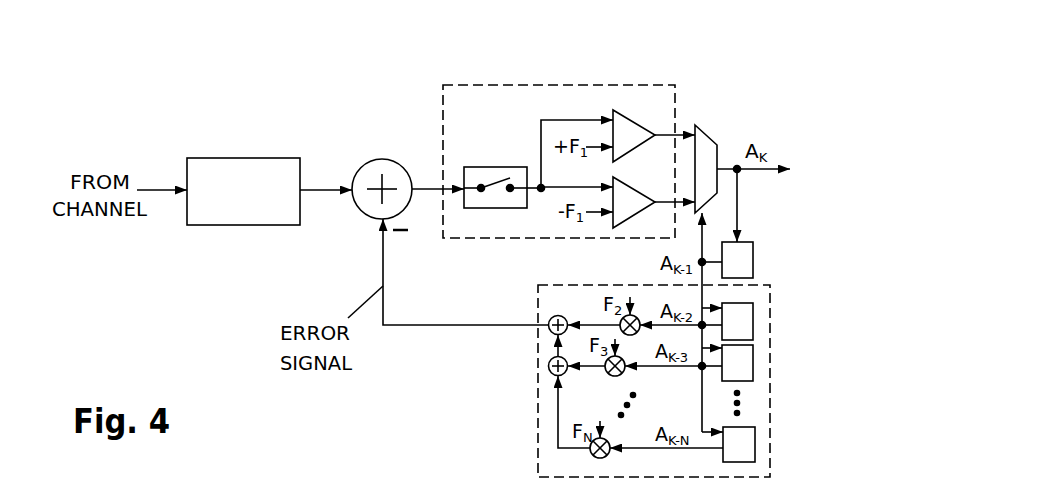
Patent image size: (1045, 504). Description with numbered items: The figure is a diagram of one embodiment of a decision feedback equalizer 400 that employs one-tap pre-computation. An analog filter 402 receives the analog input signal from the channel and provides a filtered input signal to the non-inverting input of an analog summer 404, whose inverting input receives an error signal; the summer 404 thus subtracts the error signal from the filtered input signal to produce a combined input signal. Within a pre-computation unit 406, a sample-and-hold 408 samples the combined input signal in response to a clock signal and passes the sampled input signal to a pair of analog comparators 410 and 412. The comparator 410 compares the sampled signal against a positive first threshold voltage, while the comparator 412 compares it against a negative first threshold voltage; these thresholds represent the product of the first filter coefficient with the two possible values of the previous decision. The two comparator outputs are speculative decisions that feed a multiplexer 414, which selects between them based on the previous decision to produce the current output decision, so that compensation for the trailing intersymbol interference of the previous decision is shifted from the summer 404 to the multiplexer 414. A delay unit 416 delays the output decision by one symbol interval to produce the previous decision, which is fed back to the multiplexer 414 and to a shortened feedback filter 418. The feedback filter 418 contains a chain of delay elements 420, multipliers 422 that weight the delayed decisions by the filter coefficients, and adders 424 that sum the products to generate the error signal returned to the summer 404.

The decision feedback equalizer 400 is at (486, 55).
The analog filter 402 is at (240, 226).
The analog summer 404 is at (364, 212).
The pre-computation unit 406 is at (443, 101).
The sample-and-hold 408 is at (500, 208).
The analog comparator 410 is at (630, 118).
The analog comparator 412 is at (630, 184).
The multiplexer 414 is at (711, 131).
The delay unit 416 is at (745, 260).
The shortened feedback filter 418 is at (538, 456).
The delay elements 420 is at (753, 318).
The multipliers 422 is at (637, 333).
The adders 424 is at (548, 332).